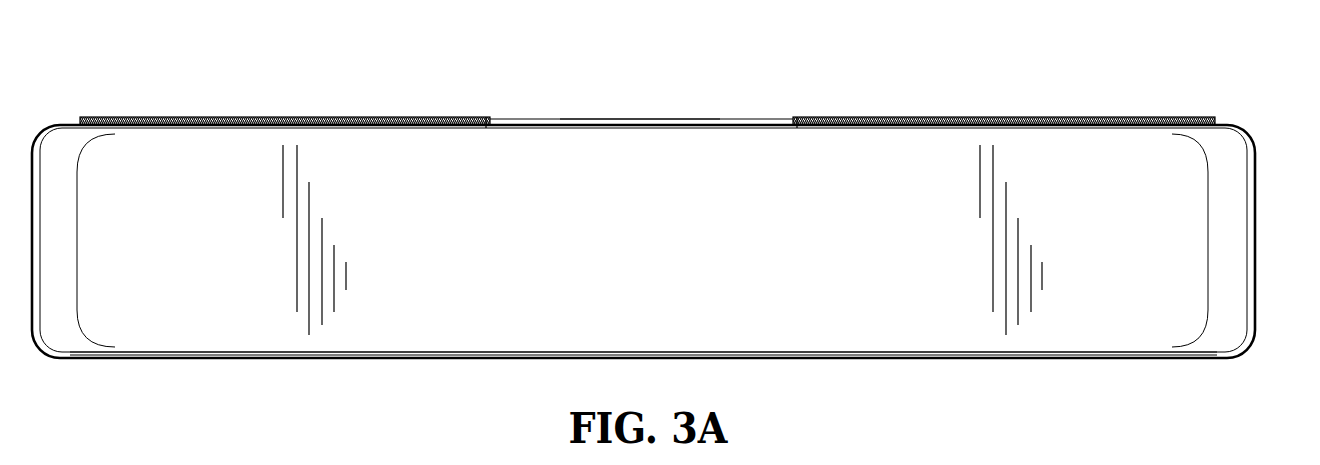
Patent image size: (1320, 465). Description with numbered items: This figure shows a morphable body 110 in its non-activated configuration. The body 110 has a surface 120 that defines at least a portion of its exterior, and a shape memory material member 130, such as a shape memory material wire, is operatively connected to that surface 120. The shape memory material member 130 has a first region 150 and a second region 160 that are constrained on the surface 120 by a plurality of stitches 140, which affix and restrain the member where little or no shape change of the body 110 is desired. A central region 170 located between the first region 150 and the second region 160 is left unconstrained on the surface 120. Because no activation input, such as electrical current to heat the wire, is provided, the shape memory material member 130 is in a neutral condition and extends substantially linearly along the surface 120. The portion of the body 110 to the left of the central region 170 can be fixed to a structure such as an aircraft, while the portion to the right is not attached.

The body 110 is at (1268, 179).
The surface 120 is at (70, 123).
The shape memory material member 130 is at (627, 122).
The stitches 140 is at (490, 128).
The first region 150 is at (488, 107).
The second region 160 is at (795, 107).
The central region 170 is at (791, 107).